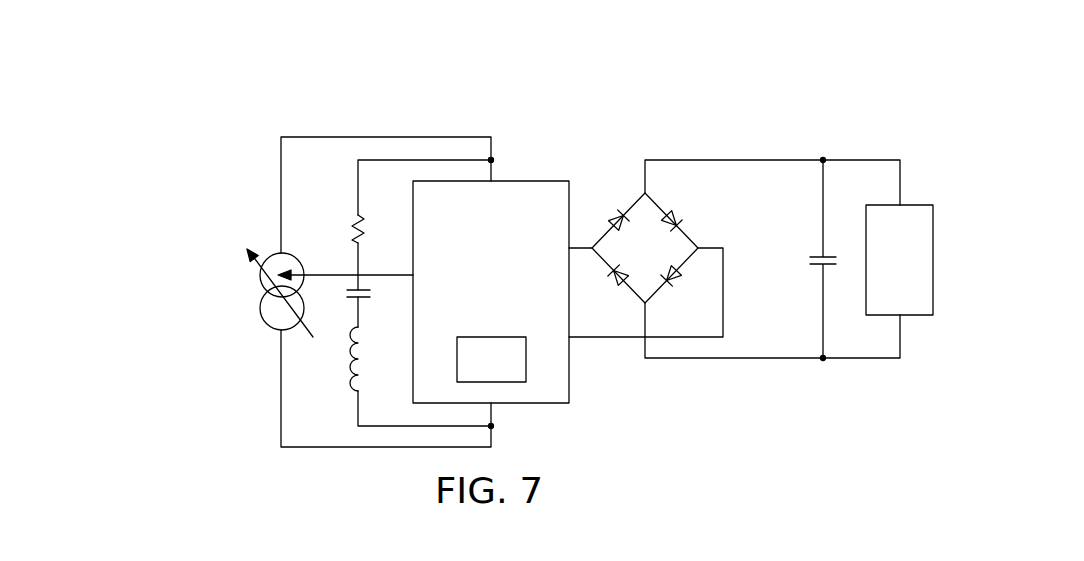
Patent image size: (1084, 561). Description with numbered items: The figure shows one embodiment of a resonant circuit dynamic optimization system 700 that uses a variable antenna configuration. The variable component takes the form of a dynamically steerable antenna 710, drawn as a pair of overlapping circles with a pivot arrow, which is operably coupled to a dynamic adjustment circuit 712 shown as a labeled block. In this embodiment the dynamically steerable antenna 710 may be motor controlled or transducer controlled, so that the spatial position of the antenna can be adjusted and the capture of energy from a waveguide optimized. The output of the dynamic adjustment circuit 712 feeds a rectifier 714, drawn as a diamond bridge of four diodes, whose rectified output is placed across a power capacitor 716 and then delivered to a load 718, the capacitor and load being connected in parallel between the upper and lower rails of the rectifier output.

The resonant circuit dynamic optimization system 700 is at (792, 112).
The dynamically steerable antenna 710 is at (259, 310).
The dynamic adjustment circuit 712 is at (525, 181).
The rectifier 714 is at (628, 199).
The power capacitor 716 is at (810, 259).
The load 718 is at (918, 205).